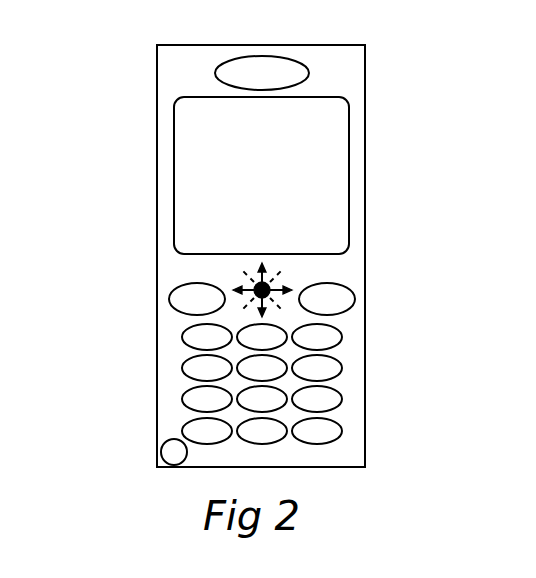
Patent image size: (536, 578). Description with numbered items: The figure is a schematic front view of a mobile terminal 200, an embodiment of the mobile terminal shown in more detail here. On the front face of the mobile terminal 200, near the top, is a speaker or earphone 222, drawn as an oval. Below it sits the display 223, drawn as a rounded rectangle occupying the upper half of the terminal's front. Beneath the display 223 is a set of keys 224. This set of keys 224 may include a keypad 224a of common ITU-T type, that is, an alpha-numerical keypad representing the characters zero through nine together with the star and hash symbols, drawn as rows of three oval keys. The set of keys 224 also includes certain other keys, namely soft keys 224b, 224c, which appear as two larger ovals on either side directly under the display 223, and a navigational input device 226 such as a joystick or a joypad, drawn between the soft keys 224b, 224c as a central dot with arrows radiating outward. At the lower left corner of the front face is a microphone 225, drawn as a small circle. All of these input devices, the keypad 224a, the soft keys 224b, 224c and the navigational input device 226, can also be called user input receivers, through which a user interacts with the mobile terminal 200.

The mobile terminal 200 is at (128, 59).
The speaker or earphone 222 is at (255, 67).
The display 223 is at (186, 163).
The set of keys 224 is at (173, 328).
The keypad 224a is at (333, 365).
The soft key 224b is at (183, 302).
The soft key 224c is at (333, 303).
The microphone 225 is at (168, 452).
The navigational input device 226 is at (257, 286).